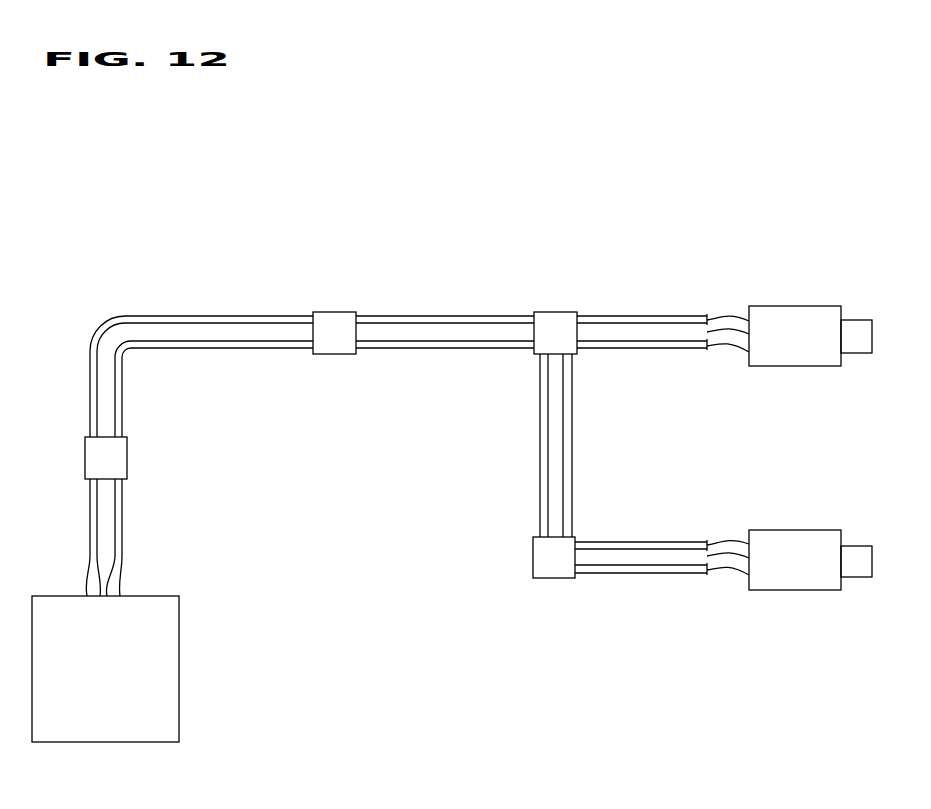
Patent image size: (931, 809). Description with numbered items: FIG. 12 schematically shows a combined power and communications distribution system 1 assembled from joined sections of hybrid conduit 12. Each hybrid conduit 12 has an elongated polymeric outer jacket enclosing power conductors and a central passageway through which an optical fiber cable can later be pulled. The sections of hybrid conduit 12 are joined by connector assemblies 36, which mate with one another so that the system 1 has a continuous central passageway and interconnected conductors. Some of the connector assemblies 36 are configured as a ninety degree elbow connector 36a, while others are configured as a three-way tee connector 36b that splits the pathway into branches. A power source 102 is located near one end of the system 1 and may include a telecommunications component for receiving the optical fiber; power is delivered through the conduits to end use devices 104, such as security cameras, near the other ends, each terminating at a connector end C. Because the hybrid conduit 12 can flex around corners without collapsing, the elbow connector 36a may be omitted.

The combined power and communications distribution system 1 is at (186, 222).
The hybrid conduit 12 is at (106, 379).
The connector assembly 36 is at (322, 312).
The 90 degree elbow connector 36a is at (562, 560).
The three-way tee connector 36b is at (554, 325).
The power source 102 is at (105, 669).
The end use device 104 is at (783, 320).
The connector end C is at (857, 418).